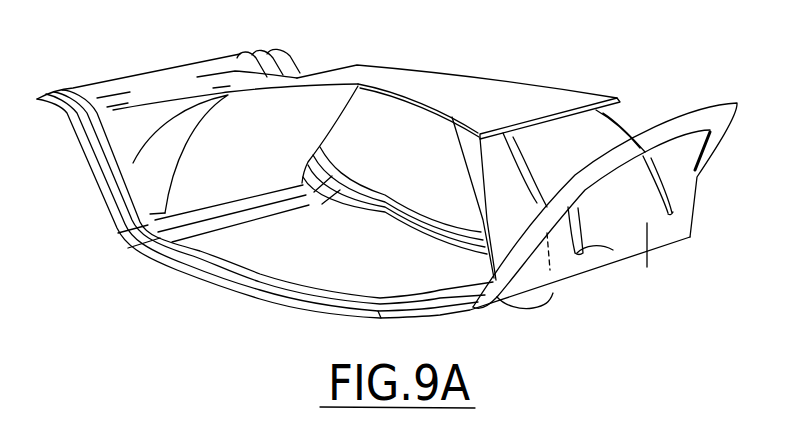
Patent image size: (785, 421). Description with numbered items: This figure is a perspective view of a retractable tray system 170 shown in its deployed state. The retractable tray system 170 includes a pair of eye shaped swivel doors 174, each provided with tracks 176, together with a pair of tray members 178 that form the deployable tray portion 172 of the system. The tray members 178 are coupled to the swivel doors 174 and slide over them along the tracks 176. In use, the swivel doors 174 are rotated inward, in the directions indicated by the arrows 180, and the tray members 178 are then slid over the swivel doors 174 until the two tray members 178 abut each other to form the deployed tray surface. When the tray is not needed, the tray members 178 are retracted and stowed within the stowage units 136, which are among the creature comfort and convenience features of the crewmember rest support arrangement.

The stowage unit 136 is at (133, 127).
The retractable tray system 170 is at (668, 57).
The deployable tray portion 172 is at (620, 98).
The swivel door 174 is at (457, 125).
The track 176 is at (613, 250).
The tray member 178 is at (458, 74).
The arrow 180 is at (456, 192).